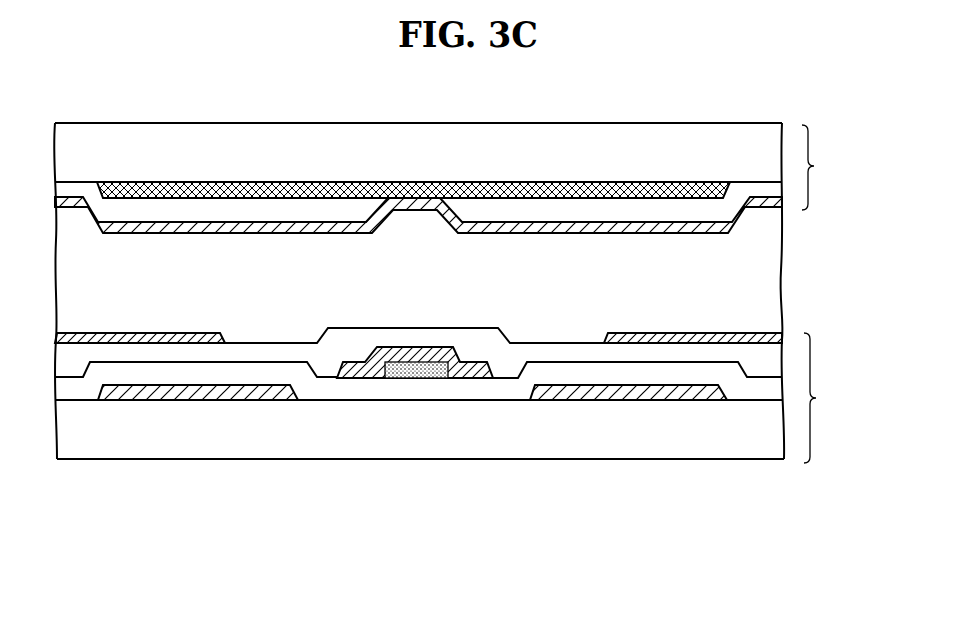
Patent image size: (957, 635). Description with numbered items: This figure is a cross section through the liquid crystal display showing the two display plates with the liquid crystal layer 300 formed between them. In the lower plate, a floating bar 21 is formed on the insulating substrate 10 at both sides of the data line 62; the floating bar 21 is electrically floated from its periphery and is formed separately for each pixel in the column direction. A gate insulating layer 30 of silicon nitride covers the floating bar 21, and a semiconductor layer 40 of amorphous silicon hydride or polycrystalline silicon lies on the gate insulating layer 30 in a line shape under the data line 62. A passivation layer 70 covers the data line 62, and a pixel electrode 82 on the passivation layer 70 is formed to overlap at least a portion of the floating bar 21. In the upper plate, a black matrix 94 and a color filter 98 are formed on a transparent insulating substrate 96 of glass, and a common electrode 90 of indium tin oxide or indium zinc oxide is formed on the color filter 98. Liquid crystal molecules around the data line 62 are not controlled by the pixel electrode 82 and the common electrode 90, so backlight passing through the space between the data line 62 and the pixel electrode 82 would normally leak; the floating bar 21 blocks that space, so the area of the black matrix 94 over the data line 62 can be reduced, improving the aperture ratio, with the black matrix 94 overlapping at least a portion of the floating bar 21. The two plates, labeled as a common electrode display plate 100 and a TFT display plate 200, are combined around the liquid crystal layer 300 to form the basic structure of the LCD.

The insulating substrate 10 is at (475, 452).
The floating bar 21 is at (185, 395).
The gate insulating layer 30 is at (515, 393).
The semiconductor layer 40 is at (410, 378).
The data line 62 is at (350, 372).
The passivation layer 70 is at (75, 368).
The pixel electrode 82 is at (180, 336).
The common electrode 90 is at (211, 228).
The black matrix 94 is at (402, 180).
The insulating substrate 96 is at (314, 148).
The color filter 98 is at (133, 208).
The common electrode display plate 100 is at (457, 398).
The TFT display plate 200 is at (457, 166).
The liquid crystal layer 300 is at (783, 272).